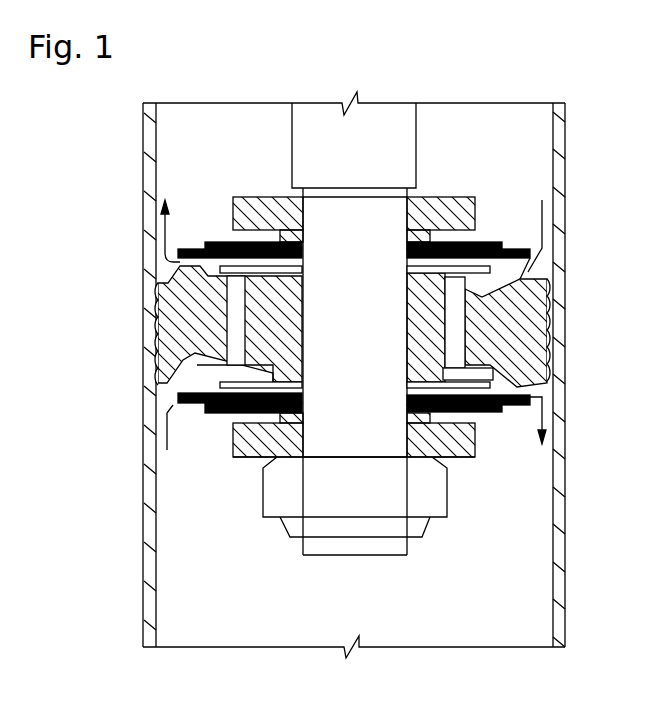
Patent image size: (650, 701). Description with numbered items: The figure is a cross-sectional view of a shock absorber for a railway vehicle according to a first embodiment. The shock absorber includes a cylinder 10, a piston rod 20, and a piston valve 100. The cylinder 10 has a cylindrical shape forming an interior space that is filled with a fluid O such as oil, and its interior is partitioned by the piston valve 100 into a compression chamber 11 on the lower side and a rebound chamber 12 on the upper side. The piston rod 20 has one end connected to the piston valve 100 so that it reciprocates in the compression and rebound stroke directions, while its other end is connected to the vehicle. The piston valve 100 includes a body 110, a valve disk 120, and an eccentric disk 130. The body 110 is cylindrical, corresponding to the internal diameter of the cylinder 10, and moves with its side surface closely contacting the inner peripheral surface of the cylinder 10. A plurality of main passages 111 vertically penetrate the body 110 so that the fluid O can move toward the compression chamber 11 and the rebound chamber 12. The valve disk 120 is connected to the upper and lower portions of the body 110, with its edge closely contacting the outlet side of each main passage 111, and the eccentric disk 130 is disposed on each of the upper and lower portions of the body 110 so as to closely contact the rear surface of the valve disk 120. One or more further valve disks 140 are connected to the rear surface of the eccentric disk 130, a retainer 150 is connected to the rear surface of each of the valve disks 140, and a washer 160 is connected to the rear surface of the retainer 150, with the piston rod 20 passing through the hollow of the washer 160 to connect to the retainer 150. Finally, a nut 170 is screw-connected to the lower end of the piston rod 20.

The cylinder 10 is at (565, 140).
The compression chamber 11 is at (217, 564).
The rebound chamber 12 is at (486, 130).
The piston rod 20 is at (392, 120).
The piston valve 100 is at (188, 317).
The body 110 is at (172, 346).
The main passages 111 is at (234, 309).
The valve disk 120 is at (170, 281).
The eccentric disk 130 is at (205, 248).
The valve disks 140 is at (490, 240).
The retainer 150 is at (247, 425).
The washer 160 is at (442, 500).
The nut 170 is at (468, 447).
The fluid O is at (165, 428).